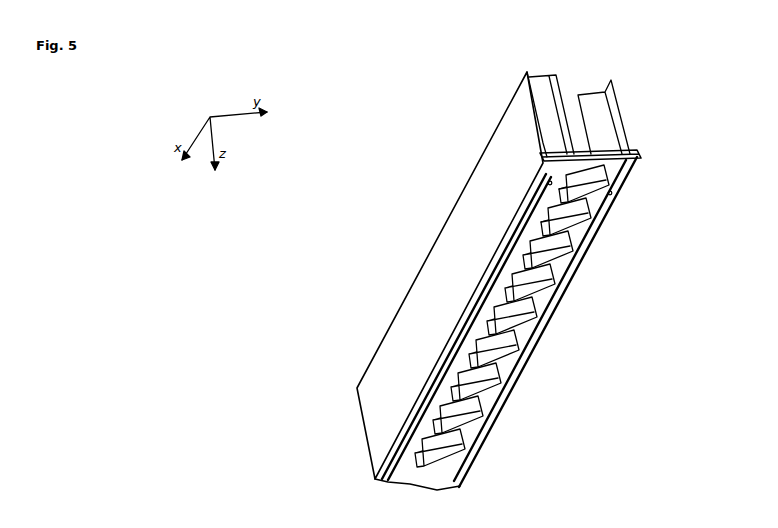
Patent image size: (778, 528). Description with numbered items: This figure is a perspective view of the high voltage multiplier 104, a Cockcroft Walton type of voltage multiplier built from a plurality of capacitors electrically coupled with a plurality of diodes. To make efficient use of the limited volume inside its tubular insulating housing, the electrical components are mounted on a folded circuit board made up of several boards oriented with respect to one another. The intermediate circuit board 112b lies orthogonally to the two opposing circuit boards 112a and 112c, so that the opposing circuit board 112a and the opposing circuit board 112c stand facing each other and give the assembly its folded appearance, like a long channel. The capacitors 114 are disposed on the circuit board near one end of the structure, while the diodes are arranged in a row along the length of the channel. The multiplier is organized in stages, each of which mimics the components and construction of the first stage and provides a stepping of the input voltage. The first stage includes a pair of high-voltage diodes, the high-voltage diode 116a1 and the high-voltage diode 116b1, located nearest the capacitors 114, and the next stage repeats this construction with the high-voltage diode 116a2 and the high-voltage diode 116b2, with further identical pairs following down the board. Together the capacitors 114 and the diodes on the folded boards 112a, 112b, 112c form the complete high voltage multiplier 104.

The high voltage multiplier 104 is at (404, 103).
The opposing circuit board 112a is at (513, 118).
The intermediate circuit board 112b is at (622, 165).
The opposing circuit board 112c is at (615, 92).
The capacitors 114 is at (600, 127).
The high-voltage diode 116a1 is at (625, 187).
The high-voltage diode 116b1 is at (612, 213).
The high-voltage diode 116a2 is at (528, 203).
The high-voltage diode 116b2 is at (520, 228).